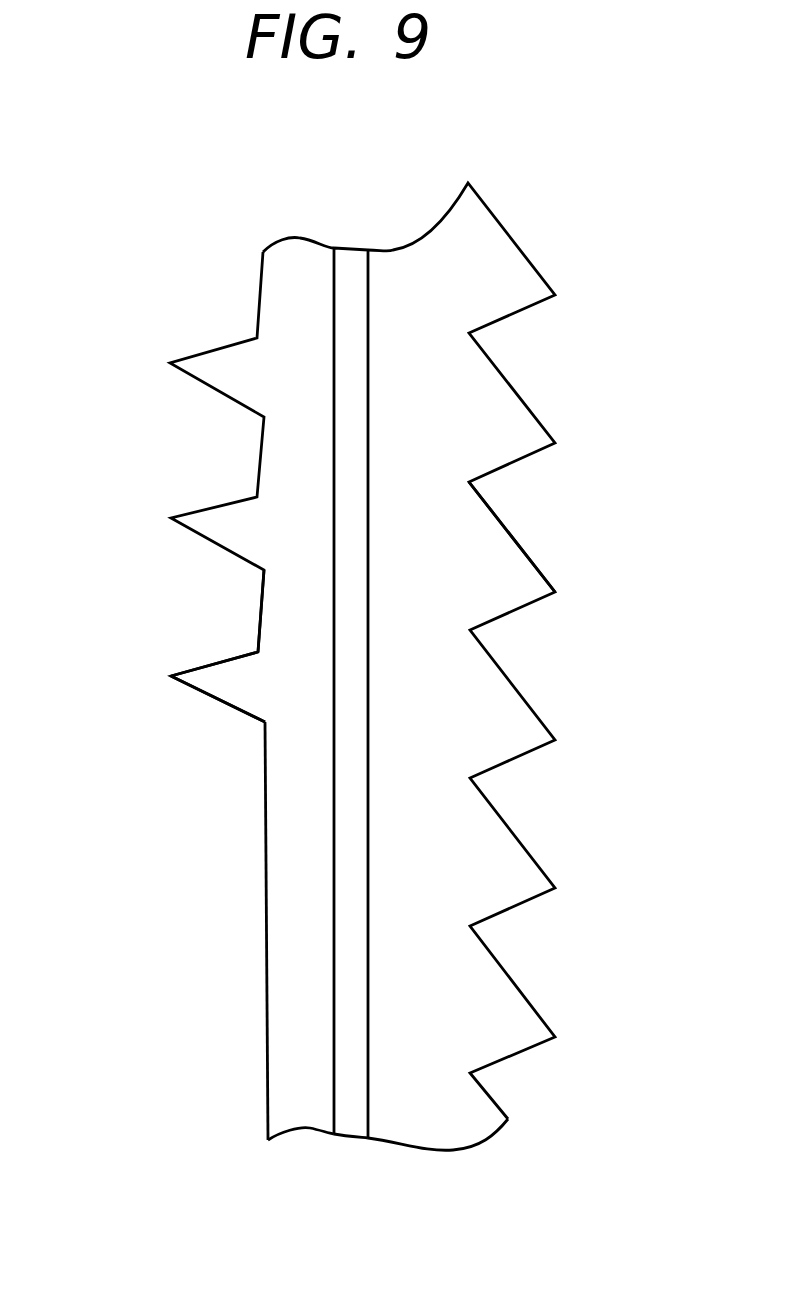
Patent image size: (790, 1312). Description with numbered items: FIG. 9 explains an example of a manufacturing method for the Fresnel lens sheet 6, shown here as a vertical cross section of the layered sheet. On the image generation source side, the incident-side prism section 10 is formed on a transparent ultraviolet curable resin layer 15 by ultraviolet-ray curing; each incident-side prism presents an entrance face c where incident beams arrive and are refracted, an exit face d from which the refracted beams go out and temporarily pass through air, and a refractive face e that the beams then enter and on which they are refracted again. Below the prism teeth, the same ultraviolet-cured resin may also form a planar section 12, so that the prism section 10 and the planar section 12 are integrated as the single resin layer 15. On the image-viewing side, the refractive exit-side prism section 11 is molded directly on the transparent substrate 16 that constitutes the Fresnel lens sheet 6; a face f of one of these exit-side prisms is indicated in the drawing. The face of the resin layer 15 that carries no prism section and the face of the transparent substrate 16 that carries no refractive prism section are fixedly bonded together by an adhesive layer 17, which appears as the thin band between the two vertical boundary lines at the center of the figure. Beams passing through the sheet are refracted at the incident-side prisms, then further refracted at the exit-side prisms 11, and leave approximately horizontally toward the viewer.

The Fresnel lens sheet 6 is at (348, 267).
The incident-side prism section 10 is at (215, 358).
The refractive exit-side prism section 11 is at (497, 1043).
The planar section 12 is at (267, 1085).
The transparent ultraviolet curable resin layer 15 is at (313, 1115).
The transparent substrate 16 is at (456, 1128).
The adhesive layer 17 is at (355, 1122).
The entrance face c is at (207, 695).
The exit face d is at (207, 663).
The refractive face e is at (258, 608).
The prism slope f is at (523, 548).